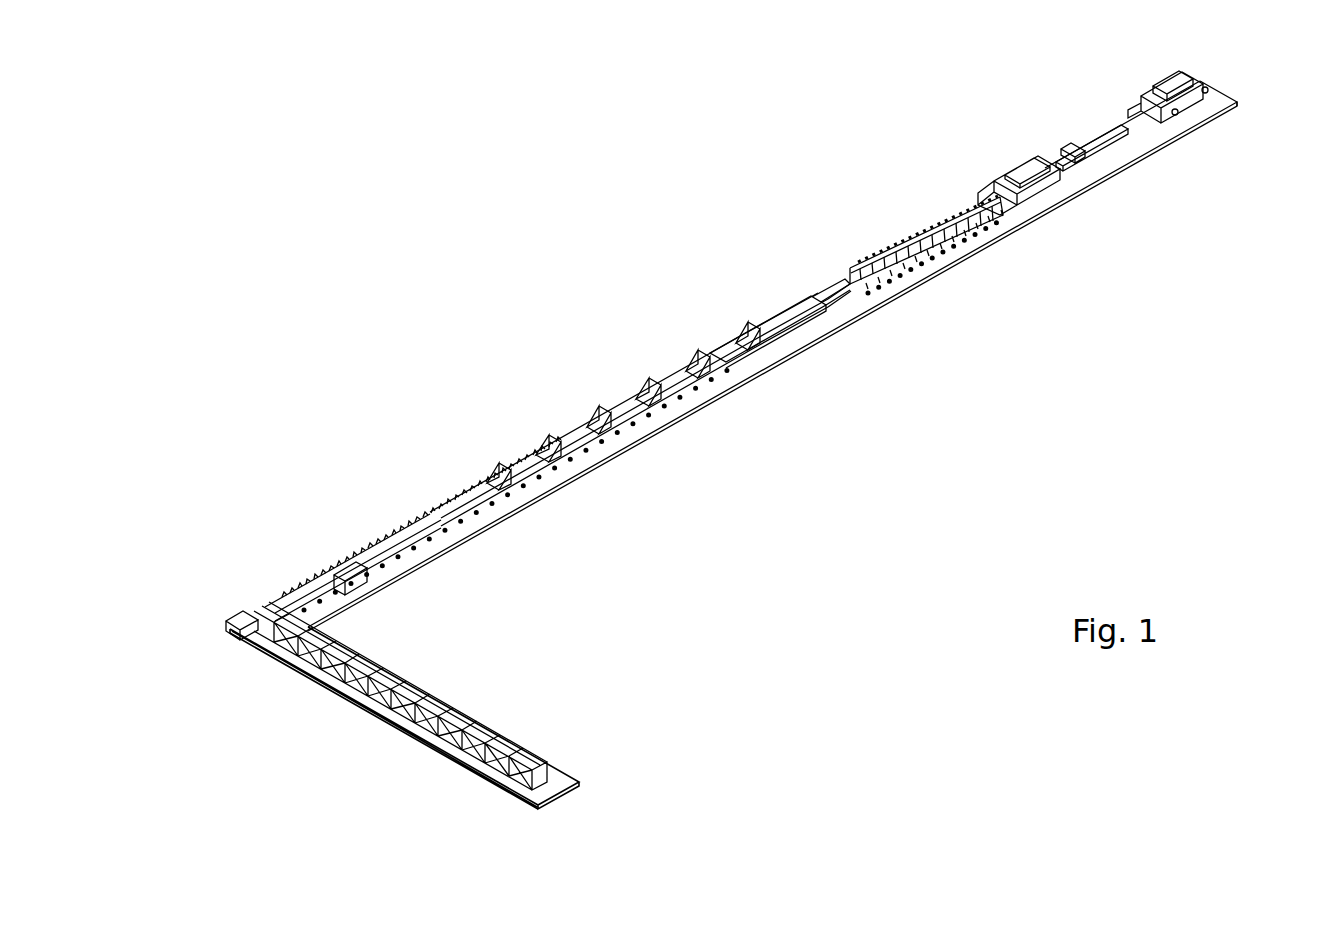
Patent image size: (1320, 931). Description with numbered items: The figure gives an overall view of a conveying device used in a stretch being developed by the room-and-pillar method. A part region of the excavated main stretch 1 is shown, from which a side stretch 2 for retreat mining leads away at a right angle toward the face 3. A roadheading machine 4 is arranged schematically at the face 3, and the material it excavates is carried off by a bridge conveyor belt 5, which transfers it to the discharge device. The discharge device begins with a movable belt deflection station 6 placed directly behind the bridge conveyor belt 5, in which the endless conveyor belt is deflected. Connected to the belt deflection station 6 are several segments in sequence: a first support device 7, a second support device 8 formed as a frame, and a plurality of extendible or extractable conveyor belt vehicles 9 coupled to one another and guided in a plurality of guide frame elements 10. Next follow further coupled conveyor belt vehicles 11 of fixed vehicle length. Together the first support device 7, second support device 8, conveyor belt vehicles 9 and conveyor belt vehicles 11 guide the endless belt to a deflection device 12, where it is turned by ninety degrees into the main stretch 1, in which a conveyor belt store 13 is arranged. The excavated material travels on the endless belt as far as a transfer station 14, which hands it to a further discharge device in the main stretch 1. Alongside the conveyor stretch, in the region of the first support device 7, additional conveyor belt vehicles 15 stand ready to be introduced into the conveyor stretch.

The main stretch 1 is at (761, 426).
The side stretch 2 is at (490, 508).
The face 3 is at (1220, 88).
The roadheading machine 4 is at (1158, 104).
The bridge conveyor belt 5 is at (1076, 144).
The belt deflection station 6 is at (1033, 175).
The first support device 7 is at (910, 259).
The second support device 8 is at (817, 247).
The conveyor belt vehicles 9 is at (638, 410).
The guide frame elements 10 is at (595, 399).
The conveyor belt vehicles 11 is at (464, 447).
The deflection device 12 is at (257, 590).
The conveyor belt store 13 is at (410, 690).
The transfer station 14 is at (232, 620).
The conveyor belt vehicles 15 is at (913, 283).